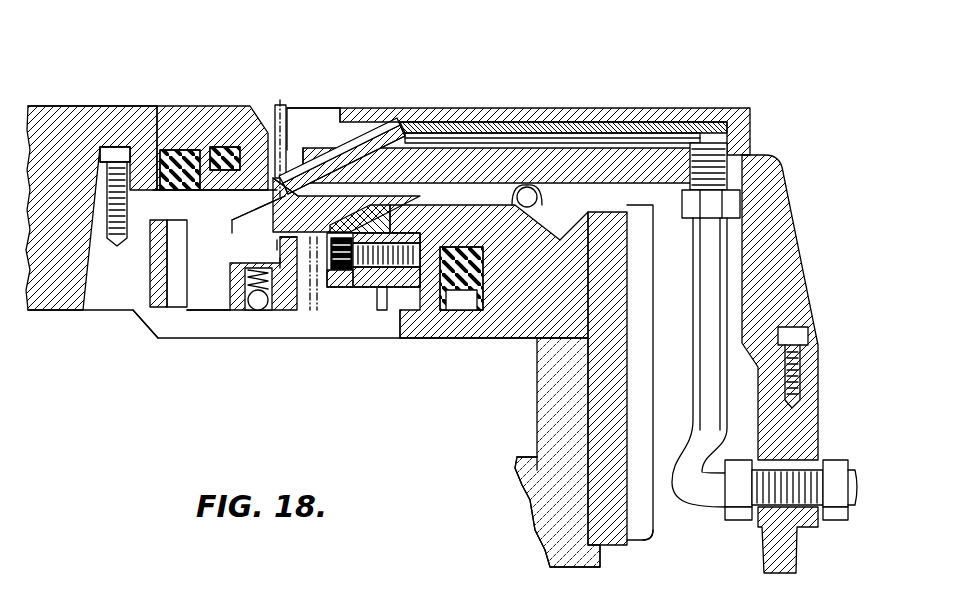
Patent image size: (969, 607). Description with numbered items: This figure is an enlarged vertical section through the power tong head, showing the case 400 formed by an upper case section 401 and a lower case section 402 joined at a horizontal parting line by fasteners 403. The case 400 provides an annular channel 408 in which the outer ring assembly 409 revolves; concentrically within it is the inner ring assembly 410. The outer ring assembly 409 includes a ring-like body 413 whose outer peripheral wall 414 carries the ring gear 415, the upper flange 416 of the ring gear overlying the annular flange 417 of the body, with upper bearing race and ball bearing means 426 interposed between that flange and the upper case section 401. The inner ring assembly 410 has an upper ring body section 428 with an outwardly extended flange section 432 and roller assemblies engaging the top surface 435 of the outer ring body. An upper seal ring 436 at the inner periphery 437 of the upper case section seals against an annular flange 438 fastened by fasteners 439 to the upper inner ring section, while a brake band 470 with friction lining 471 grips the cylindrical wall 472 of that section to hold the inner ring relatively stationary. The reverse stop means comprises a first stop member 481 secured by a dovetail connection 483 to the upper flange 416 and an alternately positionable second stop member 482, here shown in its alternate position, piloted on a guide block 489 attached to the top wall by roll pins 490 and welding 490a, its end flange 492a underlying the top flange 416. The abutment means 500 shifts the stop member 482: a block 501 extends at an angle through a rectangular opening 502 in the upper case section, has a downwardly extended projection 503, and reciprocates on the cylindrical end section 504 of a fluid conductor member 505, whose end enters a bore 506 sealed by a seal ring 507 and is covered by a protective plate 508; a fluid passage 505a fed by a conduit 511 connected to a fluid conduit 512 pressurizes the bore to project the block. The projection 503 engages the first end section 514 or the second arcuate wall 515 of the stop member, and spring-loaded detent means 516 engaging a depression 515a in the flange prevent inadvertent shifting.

The housing or case 400 is at (385, 106).
The upper case section 401 is at (470, 145).
The lower case section 402 is at (768, 540).
The fasteners 403 is at (795, 326).
The annular channel 408 is at (740, 440).
The outer ring assembly 409 is at (660, 533).
The inner ring assembly 410 is at (153, 352).
The ring-like body 413 is at (533, 467).
The outer peripheral wall 414 is at (593, 510).
The ring gear 415 is at (617, 540).
The upper flange 416 is at (505, 160).
The annular flange 417 is at (563, 401).
The upper bearing race and ball bearing means 426 is at (531, 208).
The upper ring body section 428 is at (42, 282).
The outwardly extended flange section 432 is at (513, 330).
The top surface 435 is at (525, 455).
The upper seal ring 436 is at (182, 146).
The inner periphery 437 is at (212, 145).
The annular flange 438 is at (159, 112).
The fasteners 439 is at (118, 145).
The brake band 470 is at (157, 333).
The friction lining 471 is at (170, 282).
The cylindrical wall 472 is at (153, 258).
The first stop member 481 is at (392, 292).
The second stop member 482 is at (246, 312).
The dovetail connection 483 is at (387, 204).
The guide block 489 is at (368, 280).
The roll pins 490 is at (306, 310).
The welding 490a is at (340, 292).
The end flange 492a is at (462, 313).
The abutment means 500 is at (714, 100).
The block 501 is at (279, 135).
The rectangular opening 502 is at (415, 185).
The downwardly extended projection 503 is at (280, 222).
The cylindrical end section 504 is at (334, 135).
The fluid conductor member 505 is at (563, 128).
The fluid passage 505a is at (598, 140).
The bore 506 is at (348, 142).
The seal ring 507 is at (300, 170).
The protective plate 508 is at (667, 110).
The conduit 511 is at (717, 247).
The fluid conduit 512 is at (853, 514).
The first end section 514 is at (280, 263).
The second arcuate wall 515 is at (277, 246).
The depression 515a is at (258, 313).
The spring-loaded detent means 516 is at (224, 305).